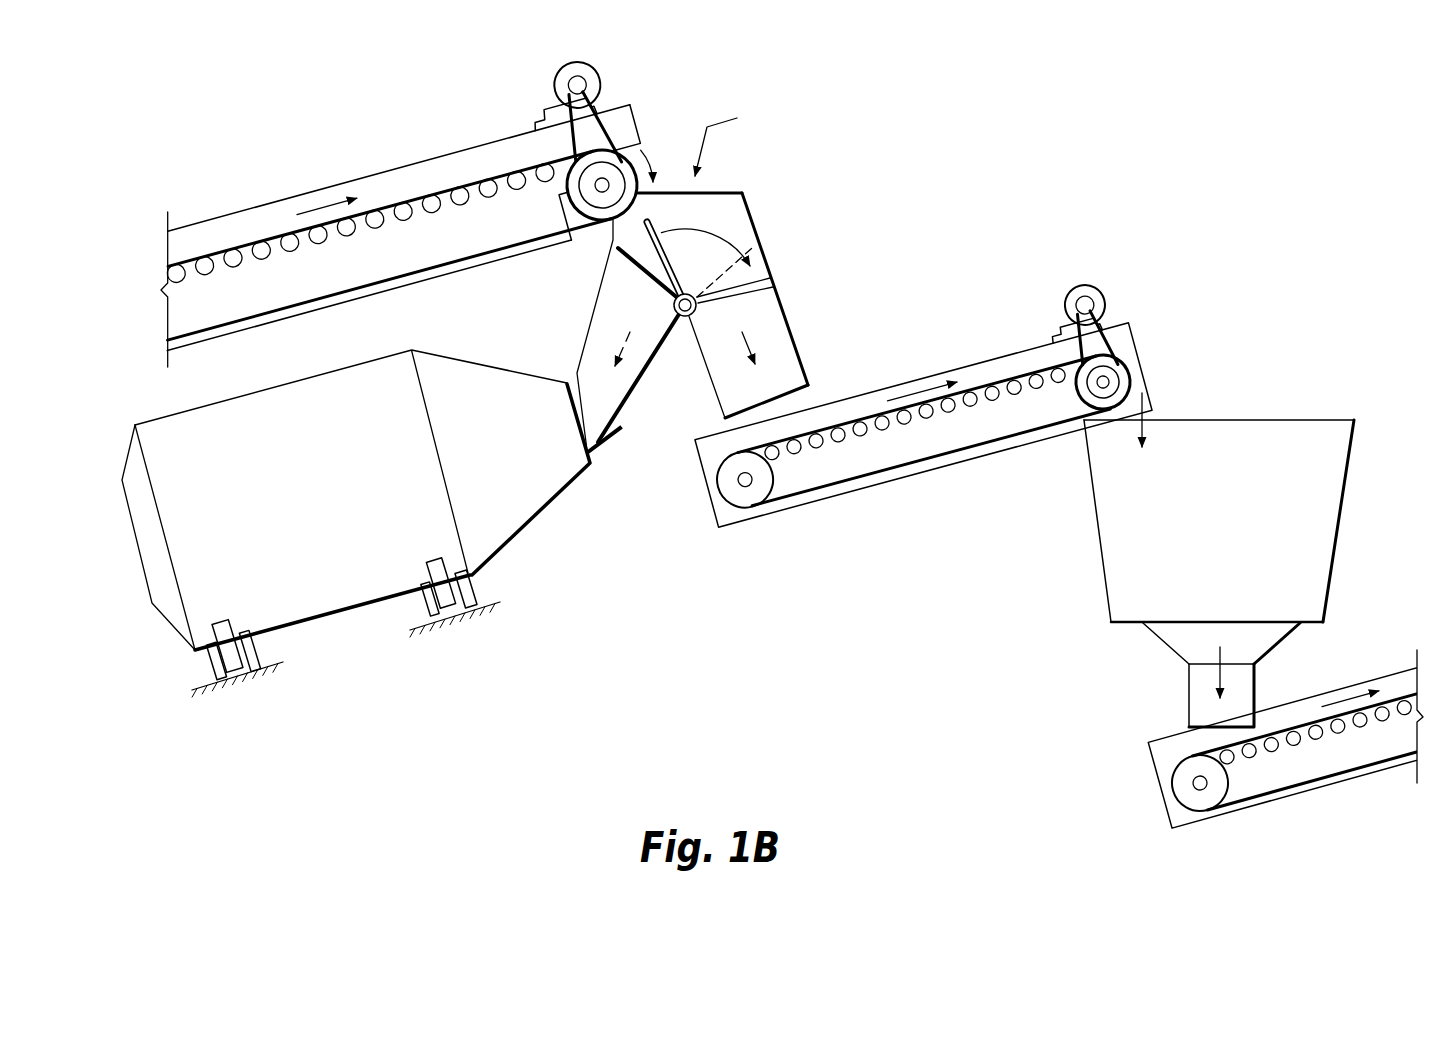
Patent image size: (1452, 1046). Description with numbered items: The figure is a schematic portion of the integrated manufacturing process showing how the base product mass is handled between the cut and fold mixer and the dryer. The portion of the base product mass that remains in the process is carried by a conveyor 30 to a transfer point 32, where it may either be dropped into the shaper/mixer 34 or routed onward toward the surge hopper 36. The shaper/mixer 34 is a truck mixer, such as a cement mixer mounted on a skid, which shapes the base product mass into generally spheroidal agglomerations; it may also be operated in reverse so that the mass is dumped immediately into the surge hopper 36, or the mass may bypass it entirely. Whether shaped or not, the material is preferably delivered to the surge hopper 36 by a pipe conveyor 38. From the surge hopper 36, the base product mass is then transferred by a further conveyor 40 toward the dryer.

The conveyor 30 is at (447, 150).
The transfer point 32 is at (755, 210).
The shaper/mixer 34 is at (483, 395).
The surge hopper 36 is at (1319, 484).
The pipe conveyor 38 is at (923, 378).
The conveyor 40 is at (1390, 672).